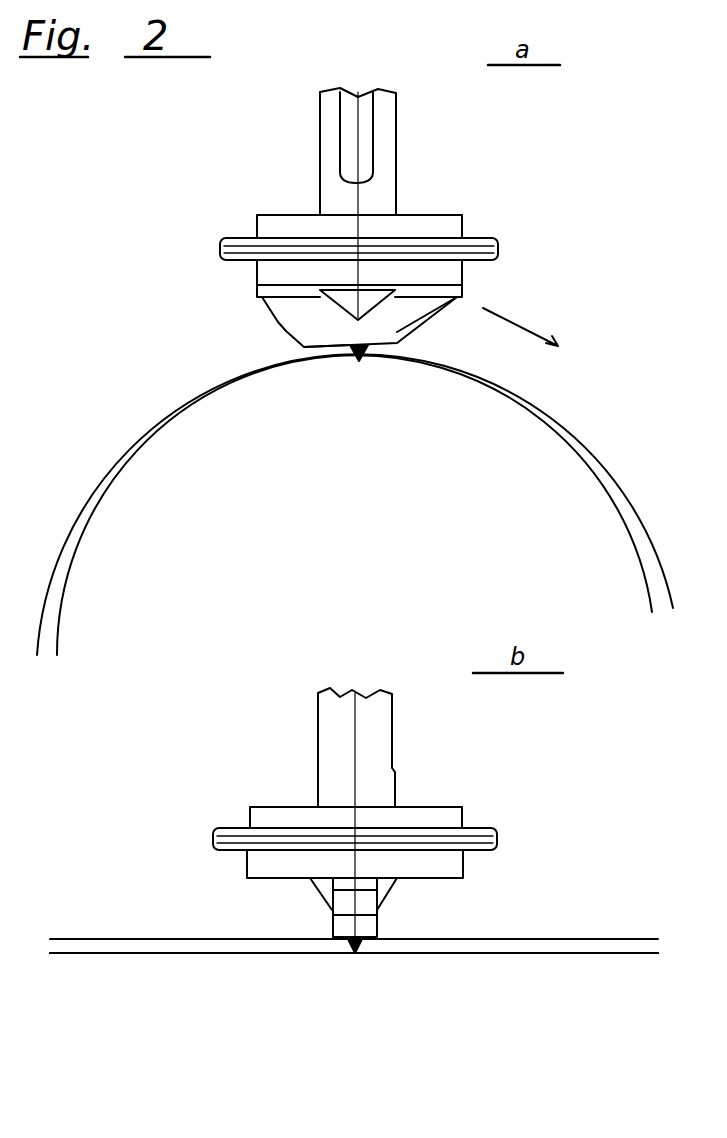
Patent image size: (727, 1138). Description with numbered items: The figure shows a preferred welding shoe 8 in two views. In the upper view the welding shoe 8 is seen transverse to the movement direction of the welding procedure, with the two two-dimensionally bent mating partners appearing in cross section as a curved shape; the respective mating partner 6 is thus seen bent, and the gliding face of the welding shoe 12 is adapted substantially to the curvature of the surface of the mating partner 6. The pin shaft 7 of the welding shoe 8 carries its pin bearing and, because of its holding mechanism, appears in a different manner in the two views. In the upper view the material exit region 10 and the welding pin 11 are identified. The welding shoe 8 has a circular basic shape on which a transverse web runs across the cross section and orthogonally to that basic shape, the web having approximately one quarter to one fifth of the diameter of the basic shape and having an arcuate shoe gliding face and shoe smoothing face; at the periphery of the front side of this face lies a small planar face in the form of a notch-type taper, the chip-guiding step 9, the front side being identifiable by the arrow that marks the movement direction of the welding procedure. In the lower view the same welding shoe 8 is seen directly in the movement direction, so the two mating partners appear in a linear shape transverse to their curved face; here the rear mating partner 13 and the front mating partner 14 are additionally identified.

The mating partner 6 is at (182, 418).
The pin shaft 7 is at (388, 187).
The welding shoe 8 is at (437, 271).
The chip-guiding step 9 is at (398, 333).
The material exit region 10 is at (366, 302).
The welding pin 11 is at (368, 352).
The gliding face of the welding shoe 12 is at (320, 352).
The rear mating partner 13 is at (537, 946).
The front mating partner 14 is at (218, 945).